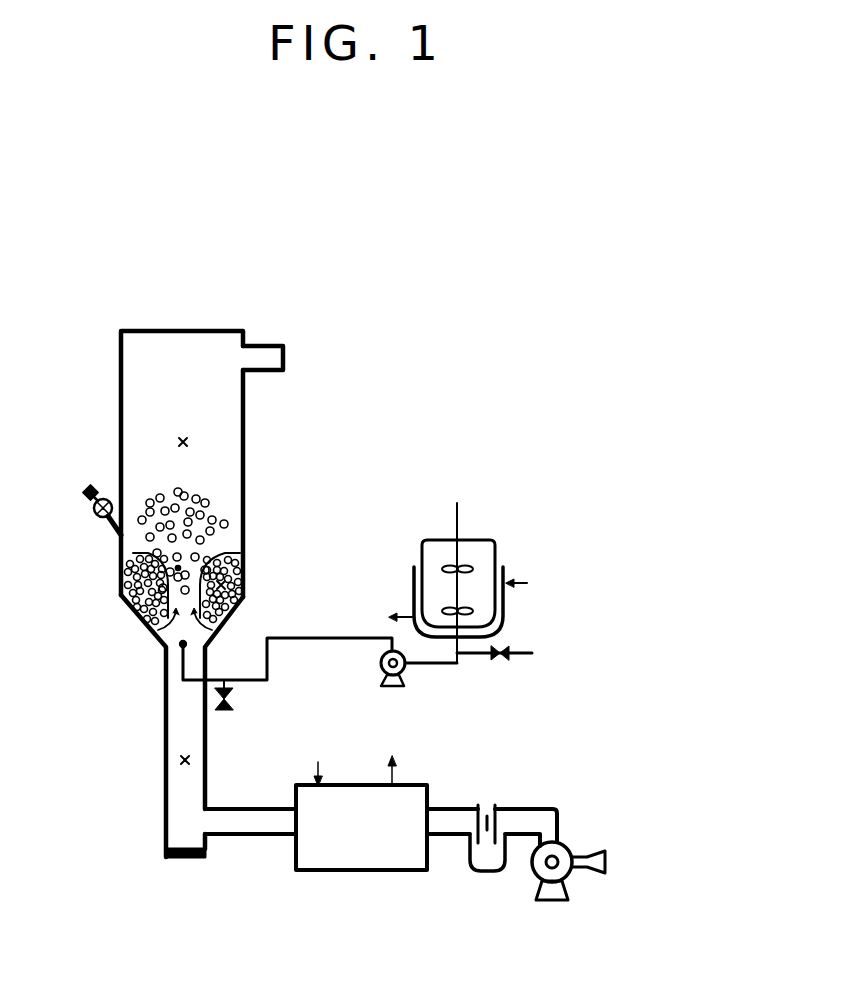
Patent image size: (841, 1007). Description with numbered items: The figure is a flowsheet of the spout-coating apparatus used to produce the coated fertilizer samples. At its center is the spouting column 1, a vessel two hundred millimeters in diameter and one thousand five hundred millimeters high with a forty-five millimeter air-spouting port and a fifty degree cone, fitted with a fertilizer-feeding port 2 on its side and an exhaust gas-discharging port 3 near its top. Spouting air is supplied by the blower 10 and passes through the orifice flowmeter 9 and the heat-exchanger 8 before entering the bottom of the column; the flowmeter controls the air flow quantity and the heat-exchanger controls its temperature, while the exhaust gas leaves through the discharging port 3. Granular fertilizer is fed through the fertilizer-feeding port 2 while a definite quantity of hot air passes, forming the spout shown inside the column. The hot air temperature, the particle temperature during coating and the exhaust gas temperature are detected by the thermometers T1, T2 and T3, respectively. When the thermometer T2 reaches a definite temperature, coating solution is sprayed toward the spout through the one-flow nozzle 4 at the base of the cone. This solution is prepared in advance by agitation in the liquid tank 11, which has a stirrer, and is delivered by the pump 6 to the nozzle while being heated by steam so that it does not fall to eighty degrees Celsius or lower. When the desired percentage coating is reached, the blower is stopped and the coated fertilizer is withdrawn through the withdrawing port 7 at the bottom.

The spouting column 1 is at (120, 362).
The fertilizer-feeding port 2 is at (97, 518).
The exhaust gas-discharging port 3 is at (265, 345).
The one-flow nozzle 4 is at (186, 660).
The pump 6 is at (380, 669).
The withdrawing port 7 is at (184, 862).
The heat-exchanger 8 is at (351, 862).
The orifice flowmeter 9 is at (488, 802).
The blower 10 is at (562, 843).
The liquid tank 11 is at (480, 546).
The thermometer T1 is at (178, 761).
The thermometer T2 is at (227, 584).
The thermometer T3 is at (190, 442).